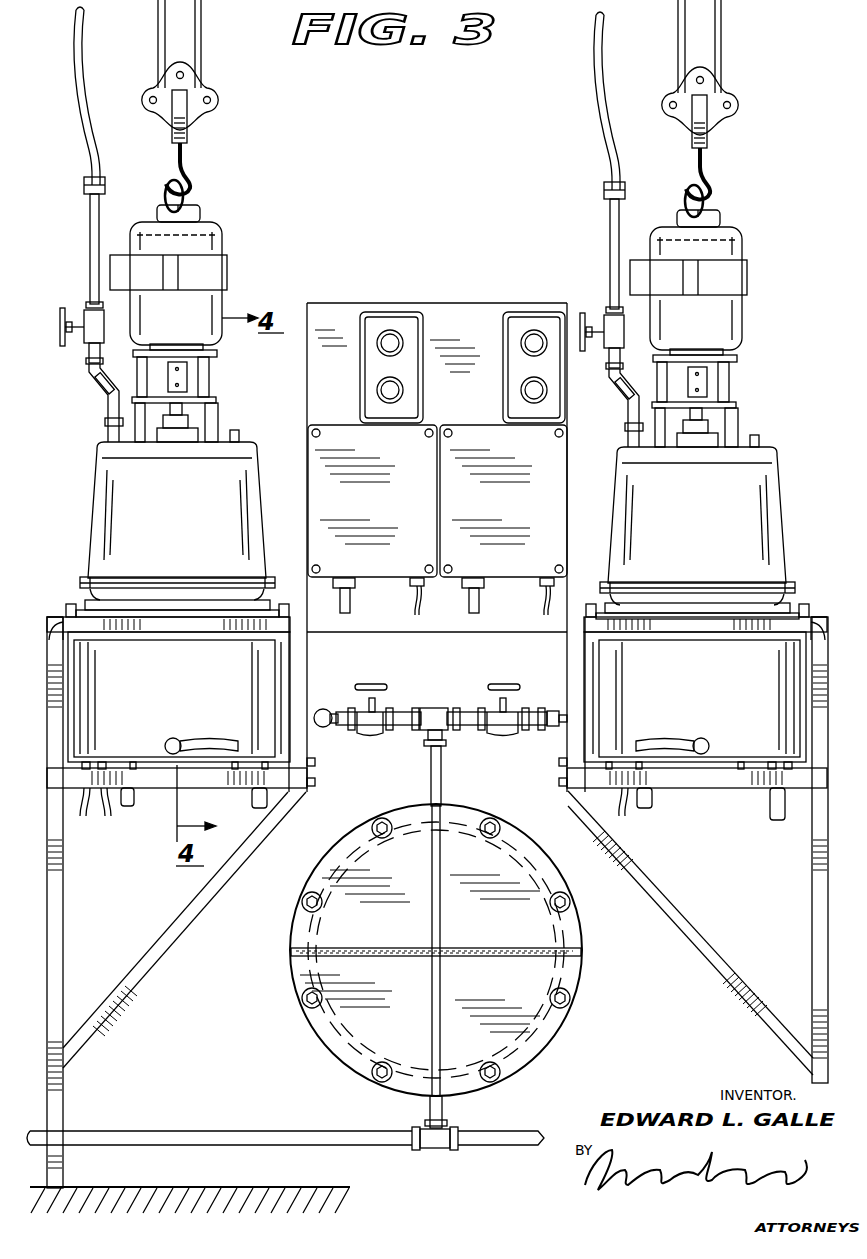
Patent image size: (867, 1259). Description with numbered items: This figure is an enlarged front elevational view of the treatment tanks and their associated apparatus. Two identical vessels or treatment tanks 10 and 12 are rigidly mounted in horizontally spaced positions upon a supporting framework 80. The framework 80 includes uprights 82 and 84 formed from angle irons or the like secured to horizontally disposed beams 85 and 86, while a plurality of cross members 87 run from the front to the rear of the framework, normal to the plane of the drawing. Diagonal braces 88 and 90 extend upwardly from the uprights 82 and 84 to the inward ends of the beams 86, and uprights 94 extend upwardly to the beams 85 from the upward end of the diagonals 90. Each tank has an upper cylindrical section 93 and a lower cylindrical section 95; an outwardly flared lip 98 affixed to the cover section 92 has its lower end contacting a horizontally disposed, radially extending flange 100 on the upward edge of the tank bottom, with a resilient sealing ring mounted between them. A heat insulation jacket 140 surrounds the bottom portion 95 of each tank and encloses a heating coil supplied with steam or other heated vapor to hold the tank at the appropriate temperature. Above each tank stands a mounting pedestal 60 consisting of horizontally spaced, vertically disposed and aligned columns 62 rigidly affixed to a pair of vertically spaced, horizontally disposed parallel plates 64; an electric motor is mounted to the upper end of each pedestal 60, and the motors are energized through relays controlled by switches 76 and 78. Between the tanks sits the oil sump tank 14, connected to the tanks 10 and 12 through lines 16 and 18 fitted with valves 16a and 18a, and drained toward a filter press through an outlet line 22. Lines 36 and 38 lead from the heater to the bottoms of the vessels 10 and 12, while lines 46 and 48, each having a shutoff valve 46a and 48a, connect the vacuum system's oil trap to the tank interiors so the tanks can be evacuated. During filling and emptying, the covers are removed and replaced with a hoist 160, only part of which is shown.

The treatment tank 10 is at (88, 488).
The treatment tank 12 is at (614, 446).
The oil sump tank 14 is at (297, 1000).
The line 16 is at (125, 806).
The valve 16a is at (378, 684).
The line 18 is at (470, 726).
The valve 18a is at (502, 684).
The outlet line 22 is at (272, 1130).
The line 36 is at (252, 798).
The line 38 is at (655, 797).
The line 46 is at (90, 238).
The shutoff valve 46a is at (62, 333).
The line 48 is at (608, 220).
The shutoff valve 48a is at (590, 320).
The mounting pedestal 60 is at (216, 398).
The columns 62 is at (210, 378).
The parallel plates 64 is at (137, 352).
The switch 76 is at (388, 312).
The switch 78 is at (530, 312).
The supporting framework 80 is at (804, 895).
The upright 82 is at (63, 920).
The upright 84 is at (812, 930).
The beam 85 is at (78, 612).
The beam 86 is at (143, 768).
The cross member 87 is at (92, 634).
The diagonal brace 88 is at (136, 970).
The diagonal brace 90 is at (690, 936).
The cover section 92 is at (283, 650).
The upper cylindrical section 93 is at (262, 525).
The uprights 94 is at (300, 668).
The lower cylindrical section 95 is at (92, 693).
The outwardly flared lip 98 is at (80, 592).
The flange 100 is at (283, 610).
The heat insulation jacket 140 is at (188, 695).
The hoist 160 is at (188, 112).